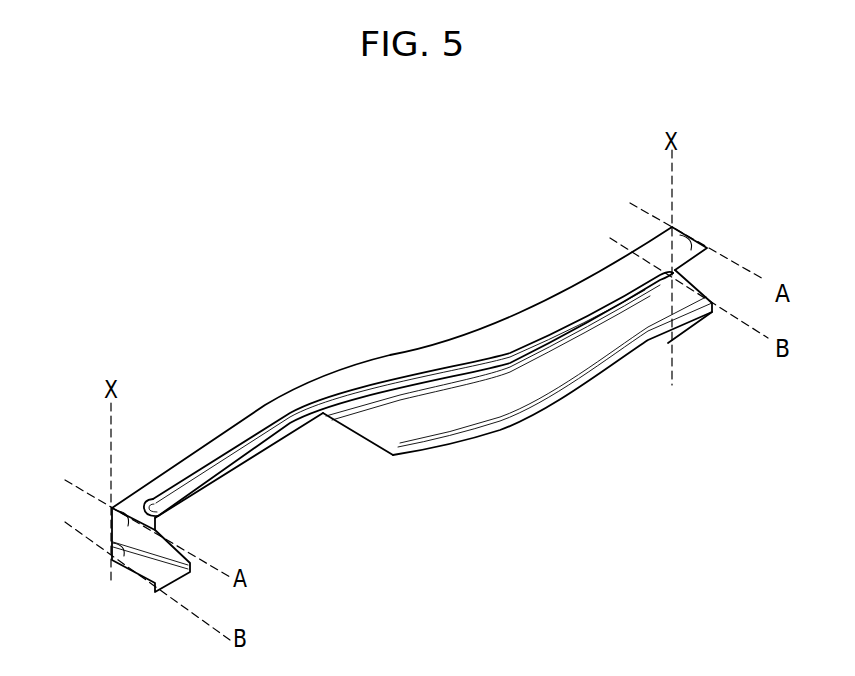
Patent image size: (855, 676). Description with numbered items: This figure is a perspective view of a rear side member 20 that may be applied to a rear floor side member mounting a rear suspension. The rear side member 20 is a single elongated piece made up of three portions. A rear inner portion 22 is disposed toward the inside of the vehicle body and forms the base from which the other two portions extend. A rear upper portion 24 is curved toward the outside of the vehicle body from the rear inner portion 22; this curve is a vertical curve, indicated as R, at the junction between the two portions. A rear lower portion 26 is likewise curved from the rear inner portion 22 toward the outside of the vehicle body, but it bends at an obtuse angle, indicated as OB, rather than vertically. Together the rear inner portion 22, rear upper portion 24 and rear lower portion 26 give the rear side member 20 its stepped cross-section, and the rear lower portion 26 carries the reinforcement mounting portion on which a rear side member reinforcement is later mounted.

The rear side member 20 is at (389, 430).
The rear inner portion 22 is at (120, 531).
The rear upper portion 24 is at (547, 322).
The rear lower portion 26 is at (572, 376).
The vertical curve R is at (133, 522).
The obtuse angle OB is at (140, 565).